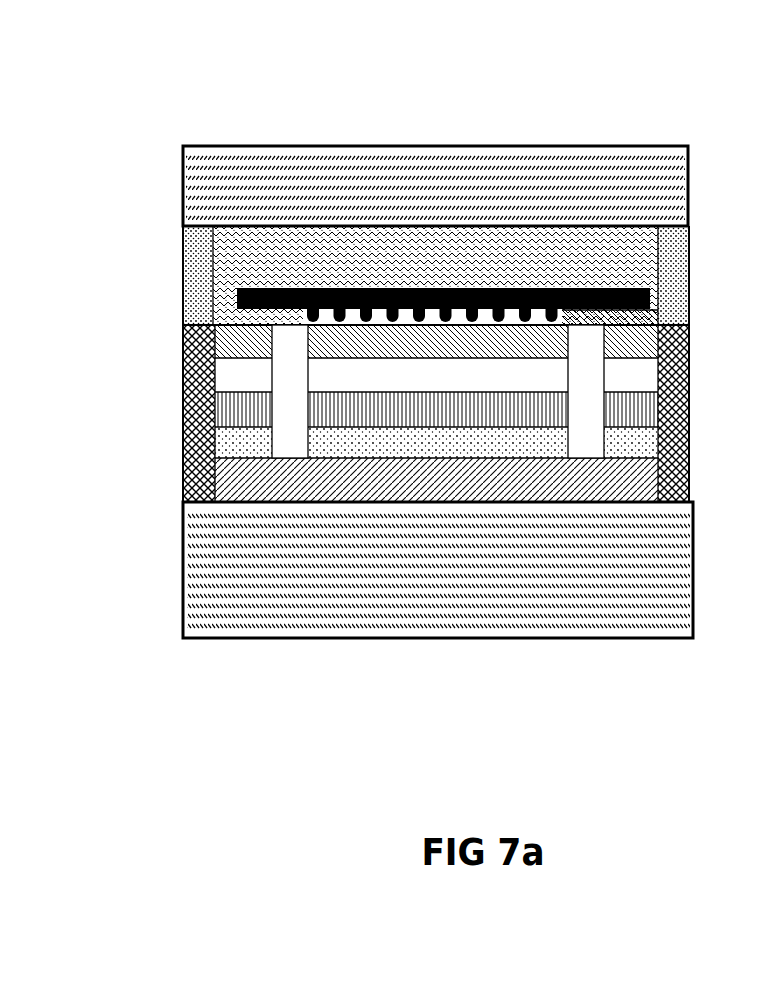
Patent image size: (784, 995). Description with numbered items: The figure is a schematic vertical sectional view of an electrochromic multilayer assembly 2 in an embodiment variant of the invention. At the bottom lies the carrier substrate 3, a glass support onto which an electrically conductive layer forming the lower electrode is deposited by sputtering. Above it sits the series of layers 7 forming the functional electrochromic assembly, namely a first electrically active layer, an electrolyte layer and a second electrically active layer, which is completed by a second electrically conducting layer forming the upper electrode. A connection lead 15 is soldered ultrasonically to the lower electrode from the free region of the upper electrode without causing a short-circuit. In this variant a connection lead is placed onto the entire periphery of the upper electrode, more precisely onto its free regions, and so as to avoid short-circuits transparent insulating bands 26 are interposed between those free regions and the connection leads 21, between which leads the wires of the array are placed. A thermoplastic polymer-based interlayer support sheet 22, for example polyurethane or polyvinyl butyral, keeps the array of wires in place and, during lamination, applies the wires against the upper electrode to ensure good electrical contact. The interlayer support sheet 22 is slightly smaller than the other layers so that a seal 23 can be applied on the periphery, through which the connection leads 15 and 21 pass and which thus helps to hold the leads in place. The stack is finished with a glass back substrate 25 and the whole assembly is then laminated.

The sensor device 2 is at (778, 658).
The carrier substrate 3 is at (507, 607).
The series of layers 7 is at (707, 362).
The connection lead 15 is at (184, 443).
The connection leads 21 is at (197, 283).
The interlayer support sheet 22 is at (417, 270).
The seal 23 is at (182, 256).
The glass back substrate 25 is at (293, 177).
The transparent insulating bands 26 is at (553, 288).